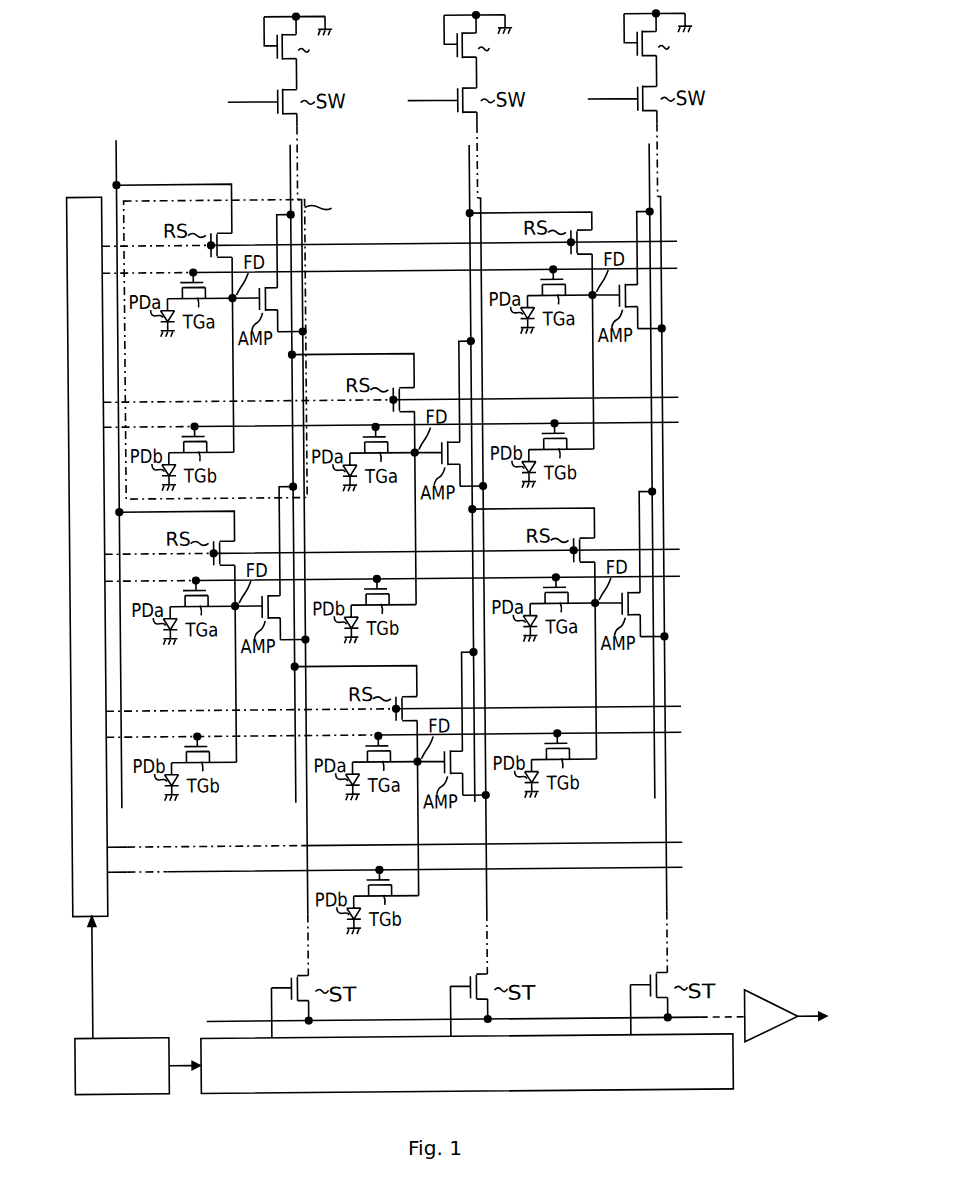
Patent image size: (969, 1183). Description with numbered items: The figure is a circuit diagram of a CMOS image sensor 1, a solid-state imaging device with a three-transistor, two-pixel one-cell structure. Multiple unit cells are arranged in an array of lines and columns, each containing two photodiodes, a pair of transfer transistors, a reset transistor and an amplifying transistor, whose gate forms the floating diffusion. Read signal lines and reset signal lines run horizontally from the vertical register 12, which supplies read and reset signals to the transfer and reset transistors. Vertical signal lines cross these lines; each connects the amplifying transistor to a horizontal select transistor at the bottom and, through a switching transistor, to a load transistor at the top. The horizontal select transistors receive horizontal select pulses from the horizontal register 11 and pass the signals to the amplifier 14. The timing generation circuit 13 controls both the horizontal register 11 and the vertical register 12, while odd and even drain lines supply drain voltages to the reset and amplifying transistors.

The CMOS image sensor 1 is at (760, 109).
The horizontal register 11 is at (729, 1075).
The vertical register 12 is at (105, 899).
The timing generation circuit 13 is at (144, 1035).
The amplifier 14 is at (761, 1000).